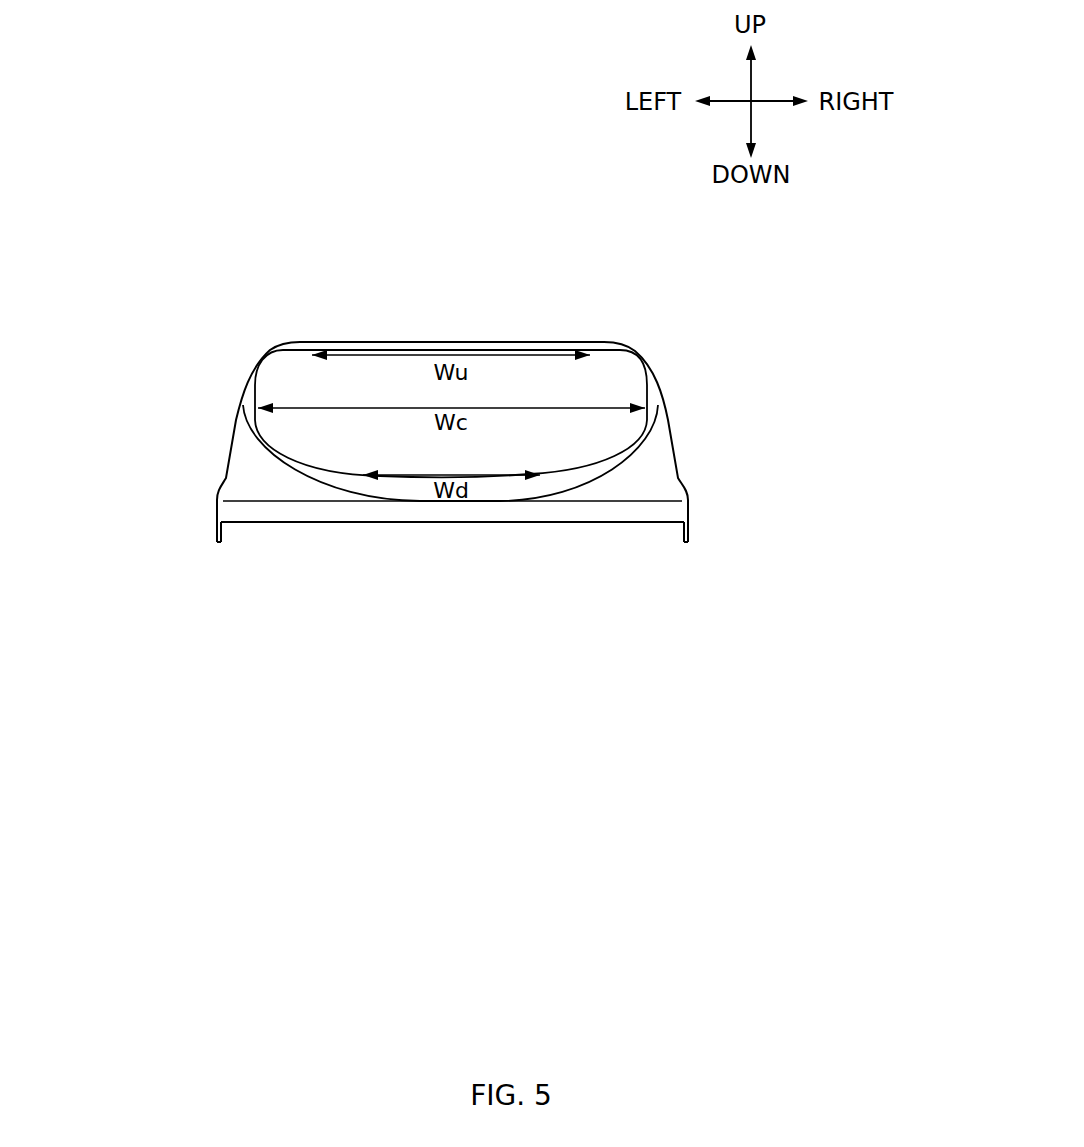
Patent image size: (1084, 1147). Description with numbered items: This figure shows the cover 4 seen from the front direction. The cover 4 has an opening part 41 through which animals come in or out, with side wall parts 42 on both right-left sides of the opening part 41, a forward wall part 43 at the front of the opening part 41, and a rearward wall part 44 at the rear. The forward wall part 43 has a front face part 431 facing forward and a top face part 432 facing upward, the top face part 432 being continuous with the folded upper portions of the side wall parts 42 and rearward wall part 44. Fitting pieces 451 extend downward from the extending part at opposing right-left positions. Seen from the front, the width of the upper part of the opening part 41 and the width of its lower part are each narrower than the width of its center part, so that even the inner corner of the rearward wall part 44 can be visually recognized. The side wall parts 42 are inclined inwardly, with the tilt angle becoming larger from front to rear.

The cover 4 is at (451, 379).
The opening part 41 is at (626, 389).
The side wall part 42 is at (242, 417).
The forward wall part 43 is at (452, 531).
The front face part 431 is at (317, 512).
The top face part 432 is at (262, 485).
The rearward wall part 44 is at (490, 342).
The fitting piece 451 is at (216, 530).